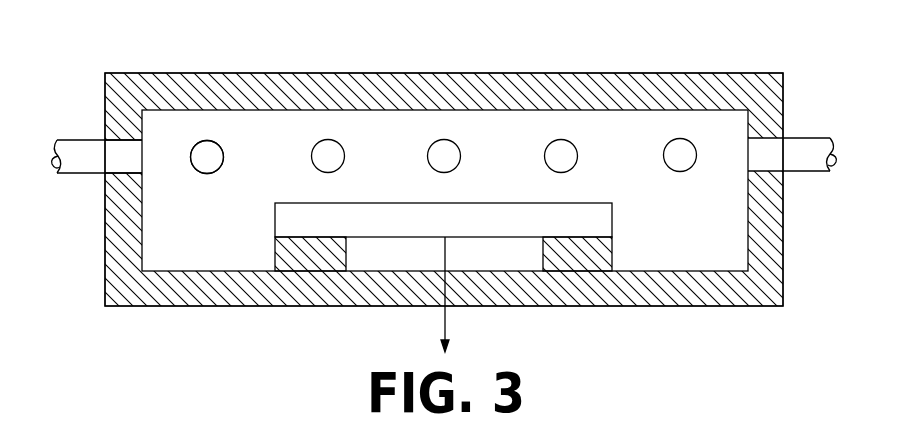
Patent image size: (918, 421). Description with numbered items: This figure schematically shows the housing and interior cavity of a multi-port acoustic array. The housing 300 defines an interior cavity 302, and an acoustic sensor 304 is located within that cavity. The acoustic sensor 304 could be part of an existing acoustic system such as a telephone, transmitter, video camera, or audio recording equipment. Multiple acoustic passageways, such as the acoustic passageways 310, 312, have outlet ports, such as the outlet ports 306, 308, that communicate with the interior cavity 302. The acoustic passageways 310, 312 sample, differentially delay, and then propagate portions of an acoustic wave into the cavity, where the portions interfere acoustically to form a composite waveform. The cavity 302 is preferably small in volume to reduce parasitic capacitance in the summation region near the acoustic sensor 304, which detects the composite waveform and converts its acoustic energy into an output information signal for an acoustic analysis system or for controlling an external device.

The housing 300 is at (107, 66).
The interior cavity 302 is at (697, 231).
The acoustic sensor 304 is at (575, 232).
The outlet port 306 is at (142, 147).
The outlet port 308 is at (219, 169).
The acoustic passageway 310 is at (122, 158).
The acoustic passageway 312 is at (210, 152).